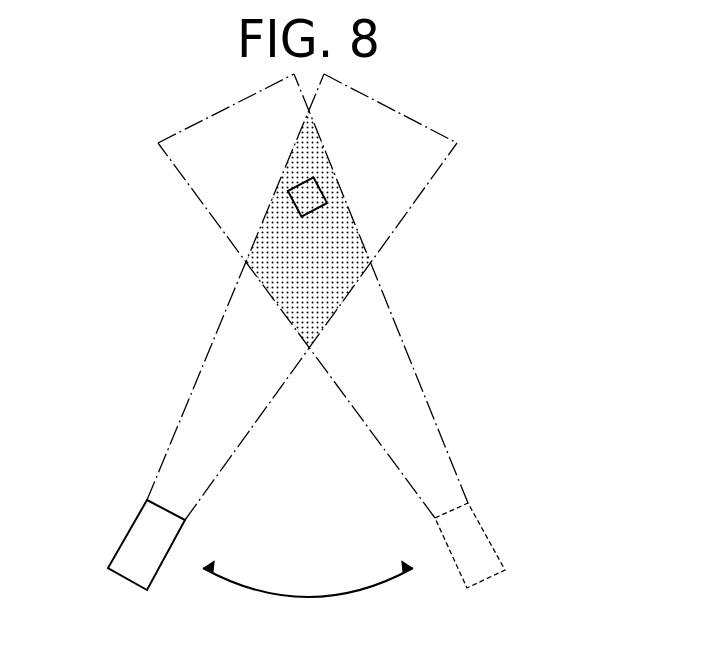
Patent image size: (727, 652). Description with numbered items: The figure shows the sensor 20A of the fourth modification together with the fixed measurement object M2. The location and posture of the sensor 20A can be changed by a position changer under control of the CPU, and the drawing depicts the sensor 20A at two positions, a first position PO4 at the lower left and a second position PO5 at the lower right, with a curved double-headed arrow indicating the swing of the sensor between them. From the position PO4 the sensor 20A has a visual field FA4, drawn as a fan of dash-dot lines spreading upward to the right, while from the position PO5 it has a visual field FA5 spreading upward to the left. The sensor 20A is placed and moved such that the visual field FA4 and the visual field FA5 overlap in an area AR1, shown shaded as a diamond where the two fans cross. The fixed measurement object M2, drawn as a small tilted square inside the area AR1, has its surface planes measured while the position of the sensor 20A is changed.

The overlap area AR1 is at (310, 265).
The fixed measurement object M2 is at (313, 193).
The visual field FA4 is at (168, 443).
The visual field FA5 is at (447, 438).
The sensor 20A is at (307, 562).
The position PO4 is at (118, 577).
The position PO5 is at (497, 573).